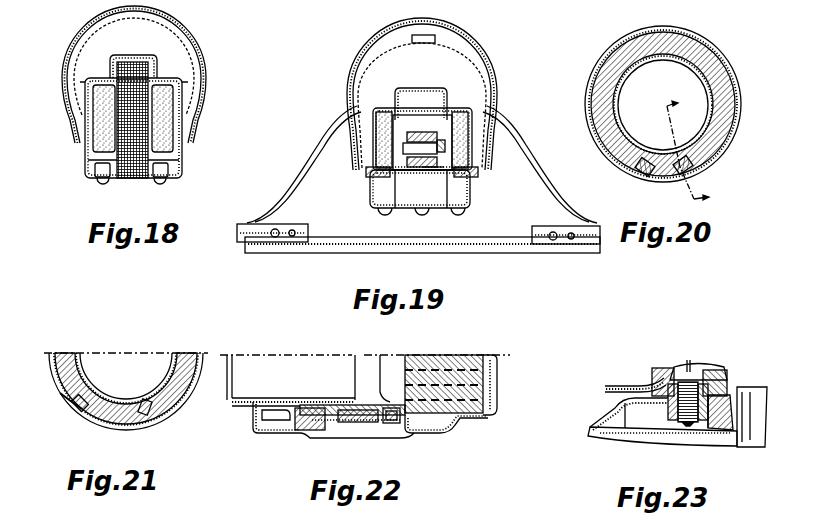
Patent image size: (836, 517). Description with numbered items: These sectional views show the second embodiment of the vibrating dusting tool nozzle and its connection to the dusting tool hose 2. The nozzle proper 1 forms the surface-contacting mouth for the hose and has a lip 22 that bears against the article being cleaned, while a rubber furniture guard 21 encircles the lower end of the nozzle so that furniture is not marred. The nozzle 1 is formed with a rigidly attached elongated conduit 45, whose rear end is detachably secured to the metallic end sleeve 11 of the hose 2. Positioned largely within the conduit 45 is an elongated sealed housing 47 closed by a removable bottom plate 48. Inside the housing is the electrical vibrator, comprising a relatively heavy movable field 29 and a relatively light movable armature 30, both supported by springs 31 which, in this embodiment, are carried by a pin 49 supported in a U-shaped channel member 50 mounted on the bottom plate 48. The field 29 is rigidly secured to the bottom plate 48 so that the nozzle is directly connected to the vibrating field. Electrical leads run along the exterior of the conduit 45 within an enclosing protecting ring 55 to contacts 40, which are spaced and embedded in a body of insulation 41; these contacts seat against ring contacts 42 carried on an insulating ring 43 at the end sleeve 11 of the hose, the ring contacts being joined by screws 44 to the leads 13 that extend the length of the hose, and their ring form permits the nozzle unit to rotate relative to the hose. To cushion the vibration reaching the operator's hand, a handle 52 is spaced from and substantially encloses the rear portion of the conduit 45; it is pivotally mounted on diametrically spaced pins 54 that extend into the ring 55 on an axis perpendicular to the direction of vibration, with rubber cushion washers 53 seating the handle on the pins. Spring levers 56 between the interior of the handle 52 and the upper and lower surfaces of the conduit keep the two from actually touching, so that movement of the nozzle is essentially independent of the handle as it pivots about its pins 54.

In FIG. 19, the nozzle proper 1 is at (422, 164).
In FIG. 22, the dusting tool hose 2 is at (490, 419).
In FIG. 20, the end sleeve 11 is at (623, 118).
In FIG. 21, the end sleeve 11 is at (171, 412).
In FIG. 22, the end sleeve 11 is at (331, 404).
In FIG. 22, the leads 13 is at (452, 419).
In FIG. 19, the rubber furniture guard 21 is at (596, 250).
In FIG. 20, the lip 22 is at (700, 146).
In FIG. 18, the field 29 is at (139, 175).
In FIG. 18, the armature 30 is at (142, 76).
In FIG. 19, the springs 31 is at (430, 172).
In FIG. 21, the contacts 40 is at (88, 420).
In FIG. 22, the contacts 40 is at (338, 434).
In FIG. 21, the body of insulation 41 is at (77, 409).
In FIG. 22, the body of insulation 41 is at (306, 433).
In FIG. 22, the ring contacts 42 is at (363, 434).
In FIG. 20, the insulating ring 43 is at (592, 86).
In FIG. 22, the insulating ring 43 is at (389, 425).
In FIG. 20, the screws 44 is at (694, 165).
In FIG. 22, the screws 44 is at (412, 432).
In FIG. 18, the elongated conduit 45 is at (135, 19).
In FIG. 19, the elongated conduit 45 is at (384, 56).
In FIG. 22, the elongated conduit 45 is at (262, 398).
In FIG. 23, the elongated conduit 45 is at (656, 441).
In FIG. 18, the sealed housing 47 is at (138, 56).
In FIG. 19, the sealed housing 47 is at (433, 100).
In FIG. 18, the bottom plate 48 is at (181, 162).
In FIG. 19, the bottom plate 48 is at (470, 190).
In FIG. 19, the pin 49 is at (424, 149).
In FIG. 19, the U-shaped channel member 50 is at (412, 173).
In FIG. 19, the handle 52 is at (371, 56).
In FIG. 23, the handle 52 is at (618, 383).
In FIG. 23, the rubber cushion washers 53 is at (656, 368).
In FIG. 23, the pins 54 is at (706, 365).
In FIG. 23, the protecting ring 55 is at (619, 415).
In FIG. 19, the spring levers 56 is at (436, 40).